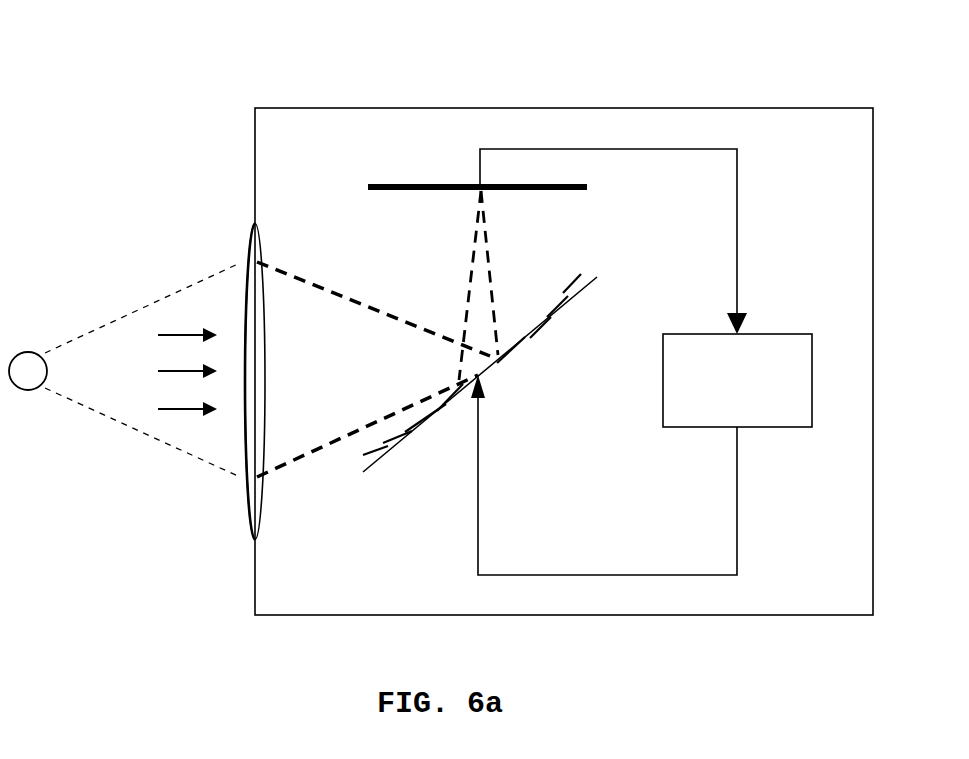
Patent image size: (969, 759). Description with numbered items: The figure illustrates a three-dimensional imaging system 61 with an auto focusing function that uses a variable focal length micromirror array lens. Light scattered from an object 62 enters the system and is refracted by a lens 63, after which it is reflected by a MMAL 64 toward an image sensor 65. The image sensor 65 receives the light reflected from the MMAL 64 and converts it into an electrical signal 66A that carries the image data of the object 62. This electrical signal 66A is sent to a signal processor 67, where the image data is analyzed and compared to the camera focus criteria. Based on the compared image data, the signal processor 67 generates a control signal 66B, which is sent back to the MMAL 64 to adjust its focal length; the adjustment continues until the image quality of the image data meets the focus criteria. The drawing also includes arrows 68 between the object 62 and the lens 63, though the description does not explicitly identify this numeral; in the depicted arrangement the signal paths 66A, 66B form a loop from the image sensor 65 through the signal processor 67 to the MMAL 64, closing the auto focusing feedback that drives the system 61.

The three-dimensional imaging system 61 is at (397, 108).
The object 62 is at (25, 352).
The lens 63 is at (258, 353).
The MMAL 64 is at (548, 317).
The image sensor 65 is at (544, 189).
The electrical signal 66A is at (737, 265).
The control signal 66B is at (703, 575).
The signal processor 67 is at (663, 402).
The light beam 68 is at (182, 408).